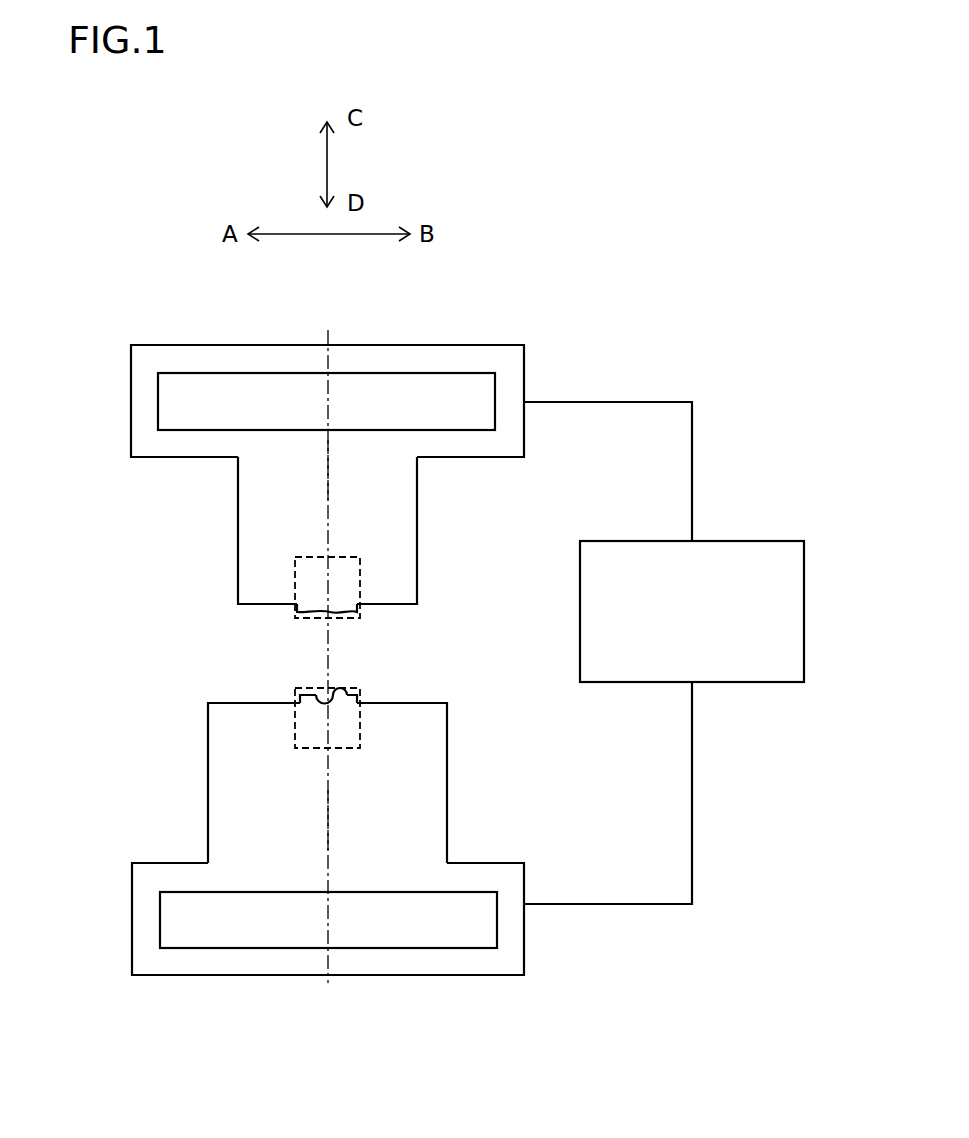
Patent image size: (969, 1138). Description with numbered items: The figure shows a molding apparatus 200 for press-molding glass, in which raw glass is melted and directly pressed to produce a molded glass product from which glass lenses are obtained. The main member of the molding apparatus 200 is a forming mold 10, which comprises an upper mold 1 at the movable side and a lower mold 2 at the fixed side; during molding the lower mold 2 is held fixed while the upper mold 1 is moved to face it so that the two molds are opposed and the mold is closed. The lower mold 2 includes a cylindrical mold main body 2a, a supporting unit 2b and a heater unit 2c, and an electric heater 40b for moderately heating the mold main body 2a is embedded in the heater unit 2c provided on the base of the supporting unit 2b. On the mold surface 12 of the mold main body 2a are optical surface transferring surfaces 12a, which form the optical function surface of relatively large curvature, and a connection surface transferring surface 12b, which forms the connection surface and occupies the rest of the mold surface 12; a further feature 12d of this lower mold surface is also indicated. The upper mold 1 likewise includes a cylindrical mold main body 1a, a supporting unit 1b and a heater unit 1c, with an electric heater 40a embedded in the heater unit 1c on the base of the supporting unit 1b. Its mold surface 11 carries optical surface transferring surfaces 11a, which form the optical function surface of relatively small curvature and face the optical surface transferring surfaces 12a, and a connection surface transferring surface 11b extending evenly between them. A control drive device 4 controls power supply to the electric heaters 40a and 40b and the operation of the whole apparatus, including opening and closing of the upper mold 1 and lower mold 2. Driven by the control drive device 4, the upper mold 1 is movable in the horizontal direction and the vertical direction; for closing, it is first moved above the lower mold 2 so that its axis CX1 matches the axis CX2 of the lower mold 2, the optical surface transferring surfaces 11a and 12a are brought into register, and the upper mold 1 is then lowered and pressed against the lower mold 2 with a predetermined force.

The molding apparatus 200 is at (719, 128).
The forming mold 10 is at (117, 320).
The upper mold 1 is at (457, 362).
The mold main body 1a is at (305, 557).
The supporting unit 1b is at (255, 505).
The heater unit 1c is at (148, 395).
The lower mold 2 is at (415, 960).
The mold main body 2a is at (307, 748).
The supporting unit 2b is at (250, 765).
The heater unit 2c is at (148, 918).
The control drive device 4 is at (741, 571).
The mold surface 11 is at (317, 623).
The optical surface transferring surface 11a is at (316, 621).
The connection surface transferring surface 11b is at (347, 618).
The mold surface 12 is at (362, 687).
The optical surface transferring surface 12a is at (318, 697).
The connection surface transferring surface 12b is at (298, 688).
The lower bonding surface protrusion 12d is at (346, 692).
The electric heater 40a is at (287, 395).
The electric heater 40b is at (290, 935).
The axis CX1 is at (330, 465).
The axis CX2 is at (330, 817).